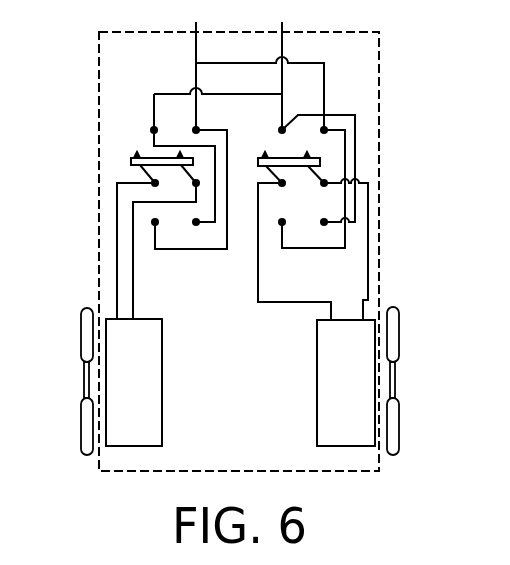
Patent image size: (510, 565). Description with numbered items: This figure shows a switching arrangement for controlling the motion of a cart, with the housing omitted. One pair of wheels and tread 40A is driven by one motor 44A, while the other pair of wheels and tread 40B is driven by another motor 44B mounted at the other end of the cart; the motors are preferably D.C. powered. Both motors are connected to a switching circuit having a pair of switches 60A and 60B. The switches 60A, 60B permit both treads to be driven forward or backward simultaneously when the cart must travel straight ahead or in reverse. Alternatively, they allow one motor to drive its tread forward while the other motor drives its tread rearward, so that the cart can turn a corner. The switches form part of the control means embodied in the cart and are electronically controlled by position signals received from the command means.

The switch 60A is at (138, 190).
The switch 60B is at (315, 197).
The motor 44A is at (140, 377).
The motor 44B is at (330, 382).
The pair of wheels and tread 40A is at (83, 378).
The pair of wheels and tread 40B is at (400, 378).